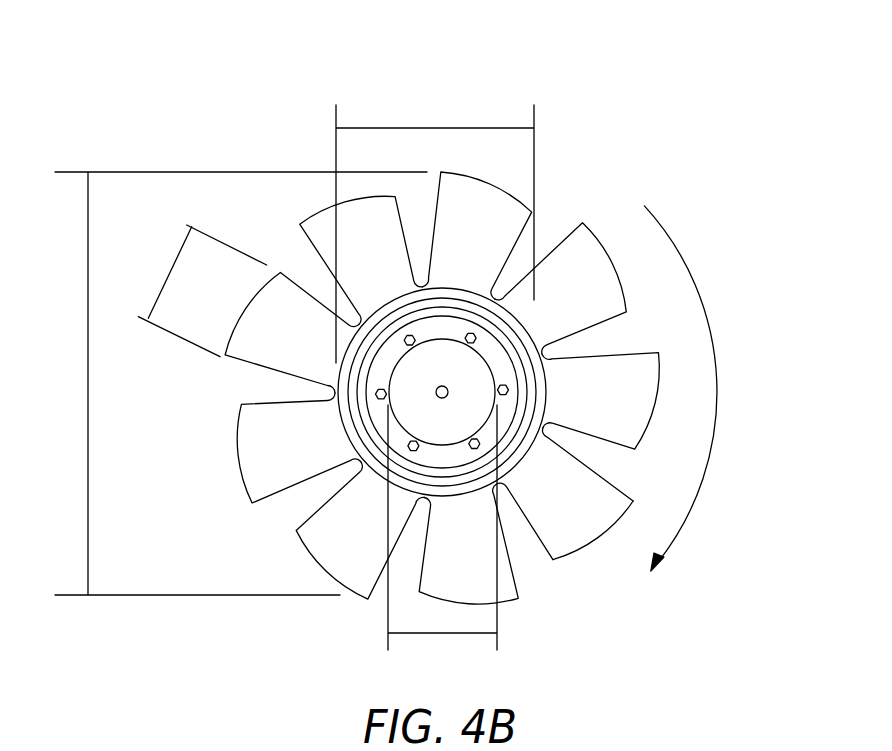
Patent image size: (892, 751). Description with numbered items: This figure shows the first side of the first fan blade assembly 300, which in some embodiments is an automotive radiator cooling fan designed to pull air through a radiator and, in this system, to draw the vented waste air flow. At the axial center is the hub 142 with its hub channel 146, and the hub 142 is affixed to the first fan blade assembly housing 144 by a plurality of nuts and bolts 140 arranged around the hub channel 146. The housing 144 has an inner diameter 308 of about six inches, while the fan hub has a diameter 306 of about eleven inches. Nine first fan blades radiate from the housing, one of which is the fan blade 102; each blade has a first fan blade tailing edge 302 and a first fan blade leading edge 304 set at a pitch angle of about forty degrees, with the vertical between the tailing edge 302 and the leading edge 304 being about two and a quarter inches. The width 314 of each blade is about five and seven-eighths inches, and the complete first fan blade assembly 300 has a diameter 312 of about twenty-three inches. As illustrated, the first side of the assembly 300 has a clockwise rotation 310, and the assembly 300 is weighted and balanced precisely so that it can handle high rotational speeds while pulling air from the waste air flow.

The first fan blade assembly 300 is at (497, 357).
The fan blade 102 is at (587, 257).
The first fan blade tailing edge 302 is at (628, 498).
The first fan blade leading edge 304 is at (553, 561).
The fan hub diameter 306 is at (431, 127).
The inner diameter of the first fan blade assembly housing 308 is at (417, 634).
The clockwise rotation 310 is at (702, 298).
The diameter of the first fan blade assembly 312 is at (88, 470).
The width of the first fan blades 314 is at (170, 272).
The bolts 140 is at (509, 390).
The hub 142 is at (432, 347).
The first fan blade assembly housing 144 is at (446, 458).
The hub channel 146 is at (443, 386).